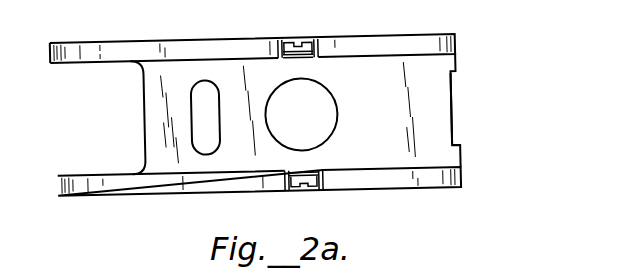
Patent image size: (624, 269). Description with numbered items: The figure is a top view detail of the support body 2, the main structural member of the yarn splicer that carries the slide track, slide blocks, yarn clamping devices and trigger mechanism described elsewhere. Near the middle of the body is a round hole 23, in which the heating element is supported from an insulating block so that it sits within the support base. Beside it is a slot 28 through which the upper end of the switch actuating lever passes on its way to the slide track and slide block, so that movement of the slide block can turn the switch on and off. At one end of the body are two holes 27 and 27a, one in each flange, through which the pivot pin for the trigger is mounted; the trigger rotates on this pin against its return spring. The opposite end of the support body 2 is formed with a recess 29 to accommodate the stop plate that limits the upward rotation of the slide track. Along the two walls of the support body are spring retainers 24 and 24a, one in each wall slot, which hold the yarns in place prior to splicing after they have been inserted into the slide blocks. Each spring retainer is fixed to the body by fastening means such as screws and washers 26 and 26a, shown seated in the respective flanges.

The support body 2 is at (460, 147).
The hole 23 is at (336, 103).
The spring retainer 24 is at (283, 190).
The spring retainer 24a is at (310, 41).
The screw and washer 26 is at (310, 190).
The screw and washer 26a is at (290, 41).
The hole 27 is at (78, 192).
The hole 27a is at (80, 46).
The slot 28 is at (205, 82).
The recess 29 is at (453, 101).